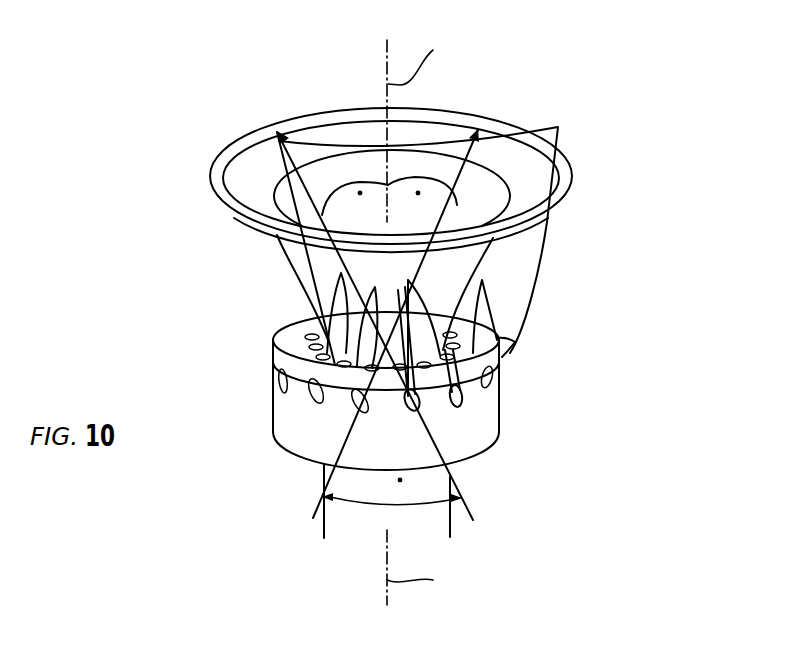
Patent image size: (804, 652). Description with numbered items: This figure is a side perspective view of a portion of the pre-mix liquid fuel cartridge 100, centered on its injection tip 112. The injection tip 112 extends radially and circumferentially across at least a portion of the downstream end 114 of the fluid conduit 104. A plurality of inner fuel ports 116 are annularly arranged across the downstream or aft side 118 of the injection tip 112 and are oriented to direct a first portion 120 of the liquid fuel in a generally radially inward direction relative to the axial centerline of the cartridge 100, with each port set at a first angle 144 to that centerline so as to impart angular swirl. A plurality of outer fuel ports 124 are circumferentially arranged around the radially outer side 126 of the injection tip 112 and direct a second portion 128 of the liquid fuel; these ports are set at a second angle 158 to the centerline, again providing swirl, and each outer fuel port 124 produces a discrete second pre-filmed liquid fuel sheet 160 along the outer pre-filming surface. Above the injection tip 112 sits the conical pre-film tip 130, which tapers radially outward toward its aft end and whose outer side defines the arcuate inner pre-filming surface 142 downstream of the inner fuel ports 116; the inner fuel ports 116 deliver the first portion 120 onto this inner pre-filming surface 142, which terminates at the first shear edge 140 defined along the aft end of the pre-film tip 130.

The pre-mix liquid fuel cartridge 100 is at (588, 59).
The fluid conduit 104 is at (323, 478).
The injection tip 112 is at (252, 451).
The downstream end 114 is at (447, 465).
The inner fuel ports 116 is at (312, 347).
The aft side 118 is at (307, 327).
The first portion of the liquid fuel 120 is at (320, 352).
The outer fuel ports 124 is at (280, 380).
The radially outer side 126 is at (488, 410).
The second portion of the liquid fuel 128 is at (517, 362).
The pre-film tip 130 is at (306, 108).
The first shear edge 140 is at (567, 193).
The inner pre-filming surface 142 is at (284, 245).
The first angle 144 is at (406, 180).
The second angle 158 is at (335, 190).
The second pre-filmed liquid fuel sheet 160 is at (525, 150).